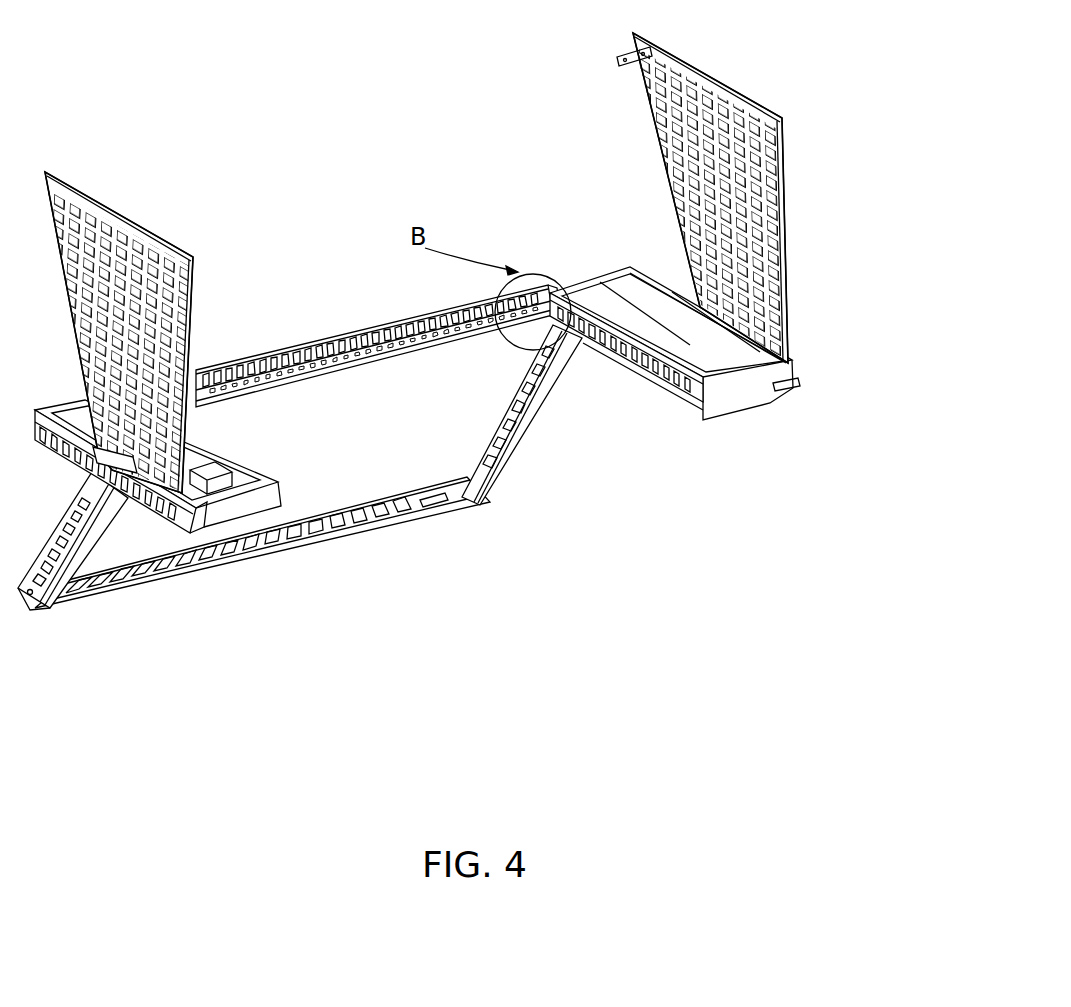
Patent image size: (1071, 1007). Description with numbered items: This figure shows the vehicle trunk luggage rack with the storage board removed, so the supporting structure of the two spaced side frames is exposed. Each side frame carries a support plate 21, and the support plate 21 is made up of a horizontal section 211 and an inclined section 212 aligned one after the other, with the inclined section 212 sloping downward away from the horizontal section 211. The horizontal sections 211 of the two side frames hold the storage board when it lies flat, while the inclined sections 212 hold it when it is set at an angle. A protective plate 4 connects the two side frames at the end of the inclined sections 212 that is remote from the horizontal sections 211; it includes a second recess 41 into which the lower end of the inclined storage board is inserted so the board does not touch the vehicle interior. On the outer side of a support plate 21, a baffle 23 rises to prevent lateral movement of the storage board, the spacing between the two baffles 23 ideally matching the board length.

The protective plate 4 is at (453, 447).
The second recess 41 is at (391, 525).
The support plate 21 is at (746, 357).
The horizontal section 211 is at (719, 351).
The inclined section 212 is at (548, 431).
The baffle 23 is at (685, 307).